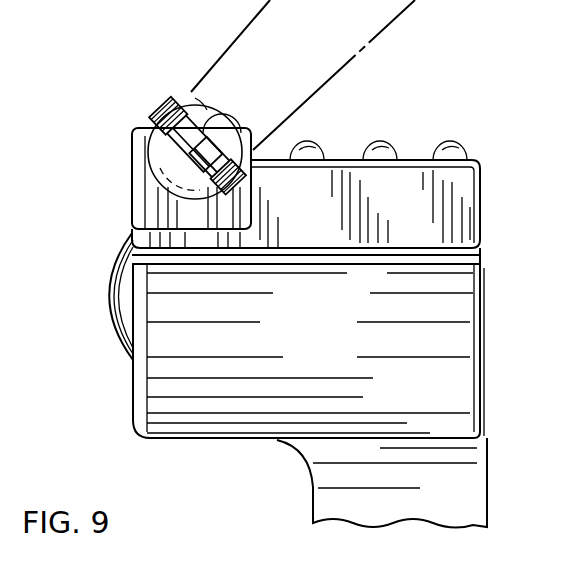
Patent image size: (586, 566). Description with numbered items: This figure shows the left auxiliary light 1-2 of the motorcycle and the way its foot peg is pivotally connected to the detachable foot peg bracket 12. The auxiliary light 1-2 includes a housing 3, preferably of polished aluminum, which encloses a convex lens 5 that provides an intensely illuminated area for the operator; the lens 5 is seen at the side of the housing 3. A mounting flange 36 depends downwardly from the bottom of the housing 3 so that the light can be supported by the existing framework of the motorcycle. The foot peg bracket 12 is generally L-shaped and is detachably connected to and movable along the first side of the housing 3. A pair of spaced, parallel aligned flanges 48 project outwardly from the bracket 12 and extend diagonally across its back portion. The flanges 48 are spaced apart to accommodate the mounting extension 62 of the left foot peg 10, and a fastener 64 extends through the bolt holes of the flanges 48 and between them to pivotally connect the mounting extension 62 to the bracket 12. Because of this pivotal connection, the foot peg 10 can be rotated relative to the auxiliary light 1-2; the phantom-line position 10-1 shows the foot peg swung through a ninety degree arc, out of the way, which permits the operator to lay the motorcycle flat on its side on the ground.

The rotated foot peg position 10-1 is at (213, 55).
The flanges 48 is at (198, 113).
The fastener 64 is at (207, 102).
The left foot peg 10 is at (147, 143).
The mounting extension 62 is at (167, 173).
The foot peg bracket 12 is at (153, 209).
The convex lens 5 is at (110, 330).
The left auxiliary light 1-2 is at (490, 318).
The housing 3 is at (460, 399).
The mounting flange 36 is at (467, 488).